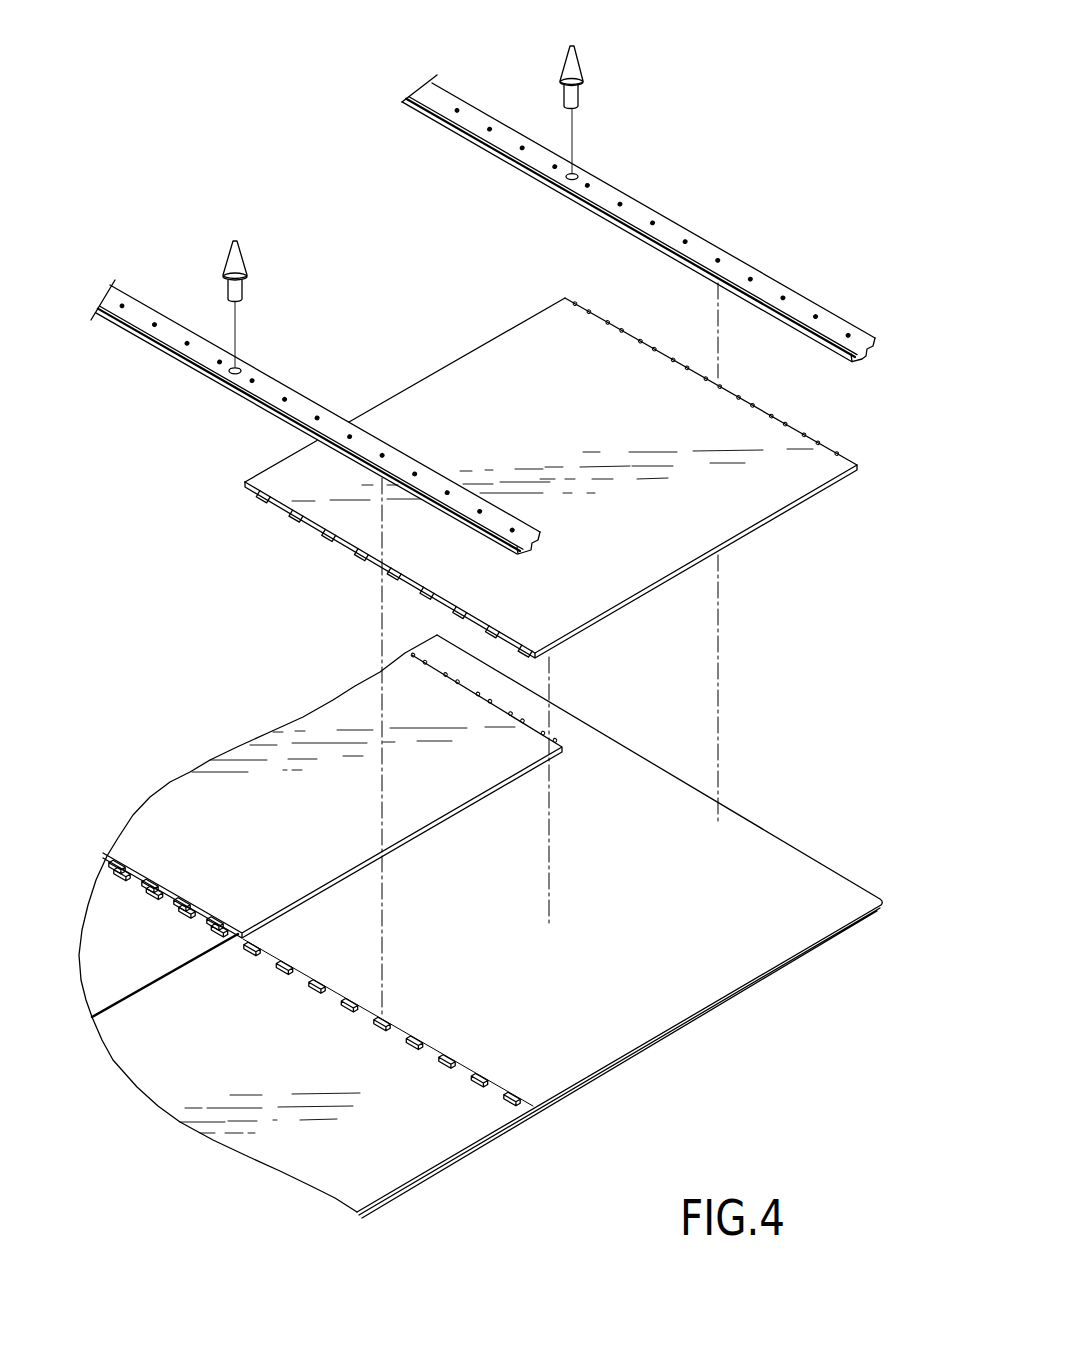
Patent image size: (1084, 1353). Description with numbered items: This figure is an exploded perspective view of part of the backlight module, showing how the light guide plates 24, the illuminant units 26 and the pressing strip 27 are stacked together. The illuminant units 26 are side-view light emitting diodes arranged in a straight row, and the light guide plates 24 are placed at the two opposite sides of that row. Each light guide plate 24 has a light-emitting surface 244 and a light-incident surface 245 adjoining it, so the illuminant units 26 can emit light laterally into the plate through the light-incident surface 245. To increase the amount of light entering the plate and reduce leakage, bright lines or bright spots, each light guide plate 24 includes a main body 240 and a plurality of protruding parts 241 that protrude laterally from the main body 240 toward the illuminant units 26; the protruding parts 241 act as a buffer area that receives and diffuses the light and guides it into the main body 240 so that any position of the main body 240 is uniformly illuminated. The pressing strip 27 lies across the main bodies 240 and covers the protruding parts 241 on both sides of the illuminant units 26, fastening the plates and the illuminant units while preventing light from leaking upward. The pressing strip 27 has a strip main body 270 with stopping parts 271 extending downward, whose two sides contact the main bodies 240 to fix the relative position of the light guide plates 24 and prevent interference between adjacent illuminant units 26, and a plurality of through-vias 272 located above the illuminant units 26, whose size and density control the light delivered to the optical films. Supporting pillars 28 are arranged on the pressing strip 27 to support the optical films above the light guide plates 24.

The light guide plate 24 is at (491, 770).
The main body 240 is at (757, 440).
The protruding parts 241 is at (350, 552).
The light-emitting surface 244 is at (708, 528).
The light-incident surface 245 is at (266, 524).
The illuminant units 26 is at (534, 1105).
The pressing strip 27 is at (315, 393).
The strip main body 270 is at (168, 331).
The stopping parts 271 is at (225, 383).
The through-vias 272 is at (286, 398).
The supporting pillars 28 is at (229, 252).